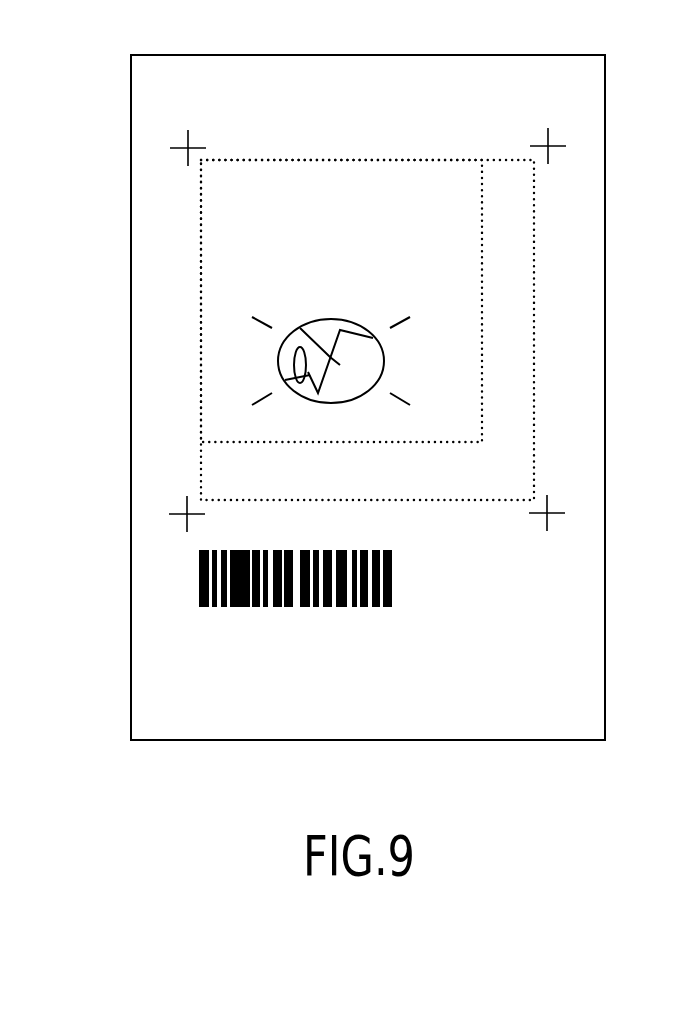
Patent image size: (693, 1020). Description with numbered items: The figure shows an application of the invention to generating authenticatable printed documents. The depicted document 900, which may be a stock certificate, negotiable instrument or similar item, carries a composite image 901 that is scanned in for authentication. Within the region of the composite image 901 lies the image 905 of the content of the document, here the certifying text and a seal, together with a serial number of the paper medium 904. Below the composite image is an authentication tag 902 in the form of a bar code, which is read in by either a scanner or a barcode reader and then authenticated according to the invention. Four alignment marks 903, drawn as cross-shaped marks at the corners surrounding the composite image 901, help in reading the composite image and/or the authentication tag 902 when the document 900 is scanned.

The document 900 is at (109, 225).
The composite image 901 is at (534, 404).
The authentication tag 902 is at (395, 581).
The alignment marks 903 is at (560, 138).
The serial number of the paper medium 904 is at (532, 483).
The image of content of the document 905 is at (482, 260).